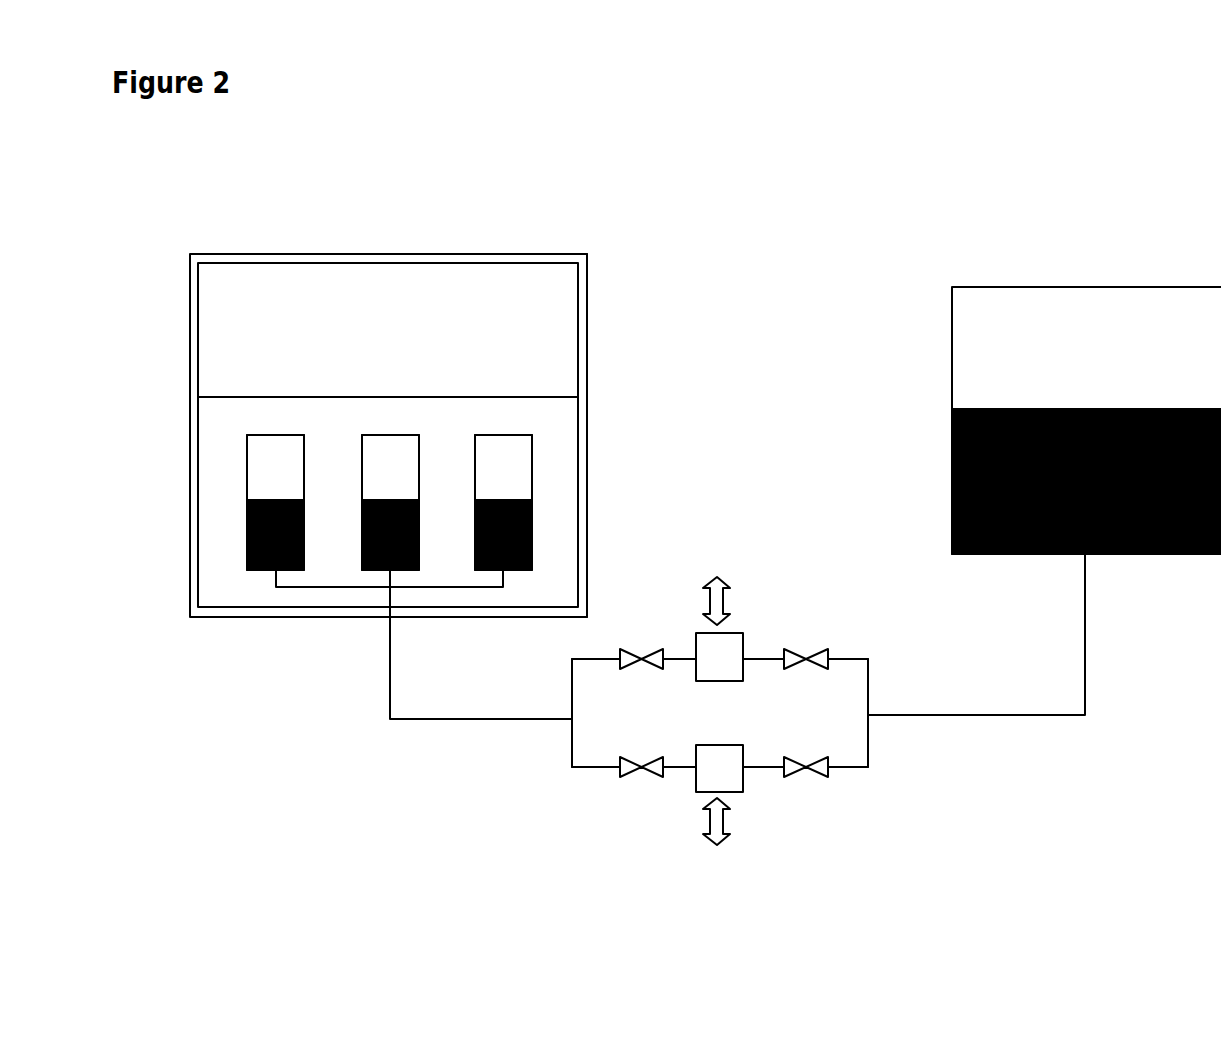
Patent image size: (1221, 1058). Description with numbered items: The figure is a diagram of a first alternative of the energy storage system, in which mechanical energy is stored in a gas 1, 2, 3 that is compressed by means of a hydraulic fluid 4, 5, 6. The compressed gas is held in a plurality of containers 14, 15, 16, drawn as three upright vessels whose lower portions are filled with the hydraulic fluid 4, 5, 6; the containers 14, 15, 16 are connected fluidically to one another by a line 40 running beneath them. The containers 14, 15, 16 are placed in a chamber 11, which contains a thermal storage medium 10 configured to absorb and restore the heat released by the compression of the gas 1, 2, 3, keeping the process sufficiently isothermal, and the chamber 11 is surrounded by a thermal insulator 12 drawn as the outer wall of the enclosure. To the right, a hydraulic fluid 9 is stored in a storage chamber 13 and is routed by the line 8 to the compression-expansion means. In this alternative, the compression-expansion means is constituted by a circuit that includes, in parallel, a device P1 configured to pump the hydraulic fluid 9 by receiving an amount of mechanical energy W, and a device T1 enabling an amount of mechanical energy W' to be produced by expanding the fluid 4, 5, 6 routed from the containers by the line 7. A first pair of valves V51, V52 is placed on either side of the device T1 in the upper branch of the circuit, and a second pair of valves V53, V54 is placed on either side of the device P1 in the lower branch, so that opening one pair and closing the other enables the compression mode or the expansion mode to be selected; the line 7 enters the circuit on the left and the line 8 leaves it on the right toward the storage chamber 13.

The gas 1 is at (270, 484).
The gas 2 is at (382, 483).
The gas 3 is at (508, 472).
The hydraulic fluid 4 is at (247, 545).
The hydraulic fluid 5 is at (358, 562).
The hydraulic fluid 6 is at (530, 518).
The line 7 is at (535, 718).
The line 8 is at (1085, 689).
The hydraulic fluid 9 is at (952, 467).
The thermal storage medium 10 is at (217, 433).
The chamber 11 is at (190, 327).
The thermal insulator 12 is at (586, 258).
The storage chamber 13 is at (952, 331).
The container 14 is at (268, 435).
The container 15 is at (382, 435).
The container 16 is at (503, 435).
The line 40 is at (482, 587).
The device T1 is at (745, 649).
The device P1 is at (695, 784).
The valve V51 is at (647, 676).
The valve V52 is at (813, 676).
The valve V53 is at (640, 782).
The valve V54 is at (813, 782).
The mechanical energy W is at (718, 843).
The mechanical energy W' is at (720, 582).